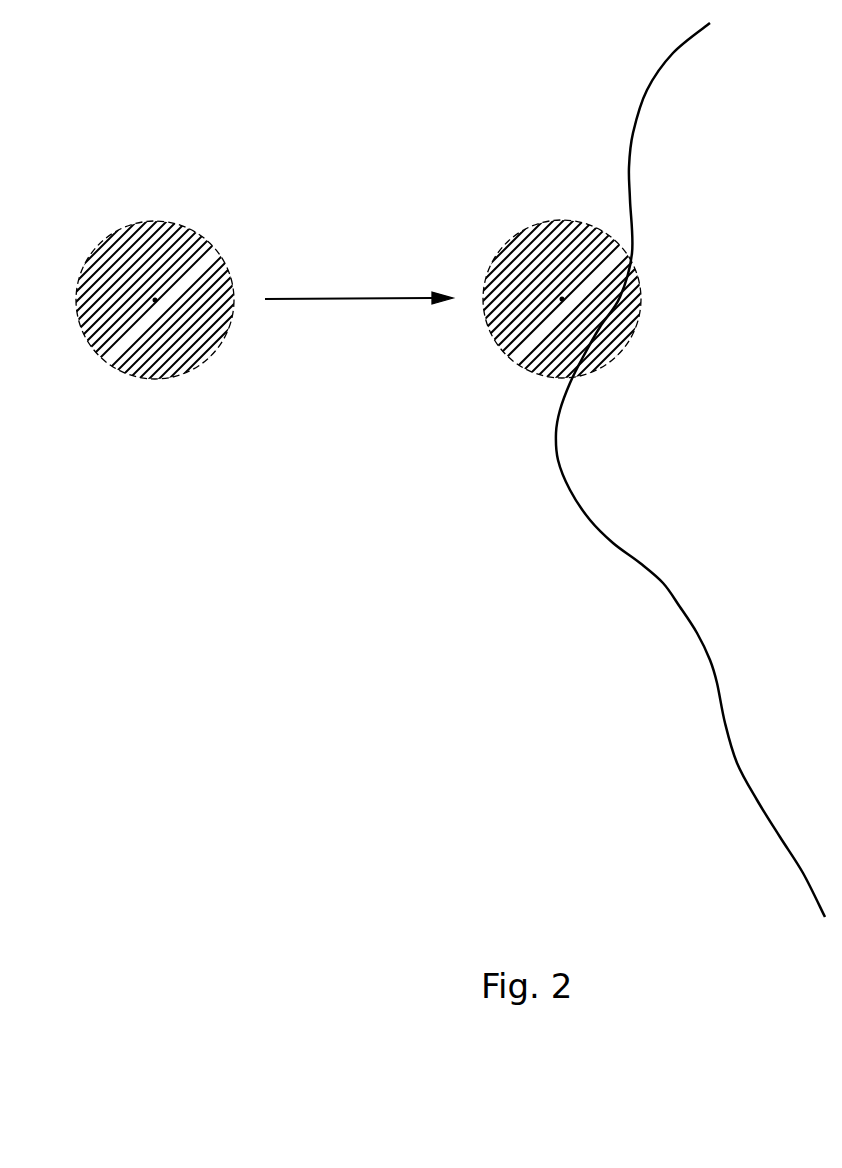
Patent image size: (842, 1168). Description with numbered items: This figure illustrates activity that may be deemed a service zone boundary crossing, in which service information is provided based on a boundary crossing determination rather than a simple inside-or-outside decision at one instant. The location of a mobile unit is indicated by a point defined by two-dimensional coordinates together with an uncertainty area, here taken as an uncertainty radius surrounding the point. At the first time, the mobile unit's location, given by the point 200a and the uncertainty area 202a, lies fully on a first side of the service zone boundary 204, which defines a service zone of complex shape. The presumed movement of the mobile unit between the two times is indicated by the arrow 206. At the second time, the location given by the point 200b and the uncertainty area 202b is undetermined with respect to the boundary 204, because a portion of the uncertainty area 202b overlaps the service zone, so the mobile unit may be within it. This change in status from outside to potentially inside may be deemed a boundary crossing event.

The point 200a is at (155, 301).
The uncertainty area 202a is at (183, 238).
The point 200b is at (562, 300).
The uncertainty area 202b is at (525, 233).
The service zone boundary 204 is at (687, 43).
The arrow 206 is at (354, 298).